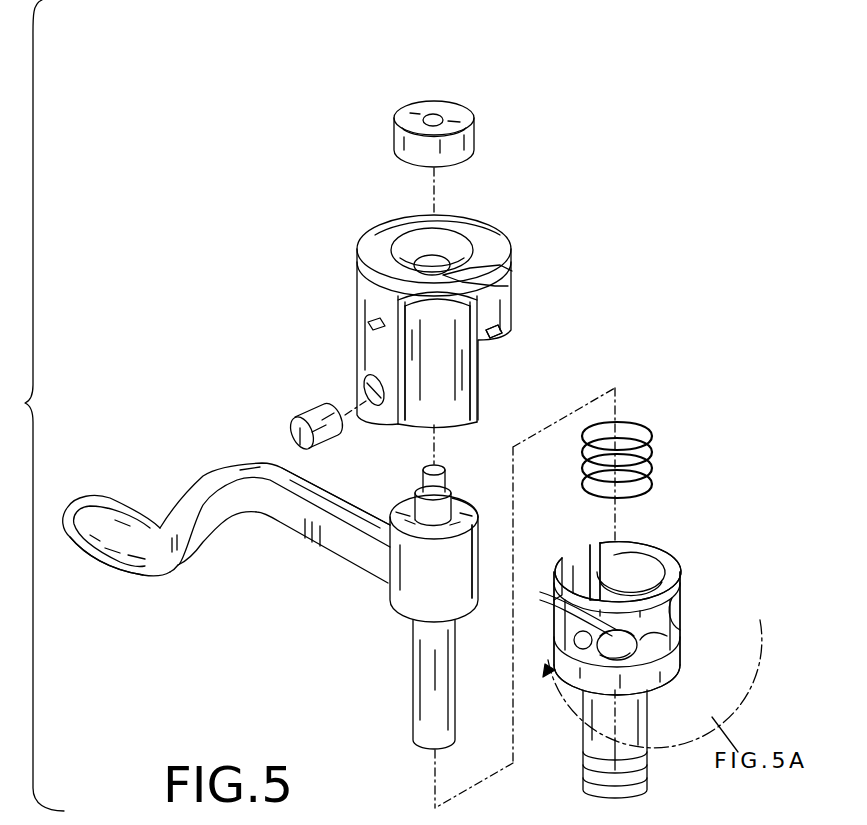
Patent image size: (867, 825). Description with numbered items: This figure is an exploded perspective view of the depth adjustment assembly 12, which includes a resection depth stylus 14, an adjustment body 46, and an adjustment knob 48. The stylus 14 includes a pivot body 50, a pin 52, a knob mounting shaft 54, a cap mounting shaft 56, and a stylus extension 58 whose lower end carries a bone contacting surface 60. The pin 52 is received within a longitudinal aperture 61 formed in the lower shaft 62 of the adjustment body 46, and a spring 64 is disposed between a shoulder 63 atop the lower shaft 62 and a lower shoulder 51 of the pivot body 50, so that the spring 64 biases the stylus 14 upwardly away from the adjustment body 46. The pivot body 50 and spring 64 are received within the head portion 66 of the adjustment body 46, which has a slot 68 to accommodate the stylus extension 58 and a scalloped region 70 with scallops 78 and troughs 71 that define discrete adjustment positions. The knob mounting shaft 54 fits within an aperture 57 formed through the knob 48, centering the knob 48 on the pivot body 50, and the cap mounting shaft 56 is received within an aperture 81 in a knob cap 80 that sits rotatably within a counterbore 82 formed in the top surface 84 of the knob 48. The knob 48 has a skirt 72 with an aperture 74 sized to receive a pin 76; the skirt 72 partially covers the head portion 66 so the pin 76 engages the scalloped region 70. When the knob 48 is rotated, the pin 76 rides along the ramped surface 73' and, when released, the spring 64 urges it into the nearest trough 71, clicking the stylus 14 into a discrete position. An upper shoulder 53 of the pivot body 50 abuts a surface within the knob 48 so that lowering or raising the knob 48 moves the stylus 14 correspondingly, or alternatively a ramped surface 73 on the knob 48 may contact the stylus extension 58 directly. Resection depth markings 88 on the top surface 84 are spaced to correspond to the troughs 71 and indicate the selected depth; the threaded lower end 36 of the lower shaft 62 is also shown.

The depth adjustment assembly 12 is at (396, 78).
The resection depth stylus 14 is at (138, 514).
The threaded stem end 36 is at (647, 765).
The adjustment body 46 is at (642, 538).
The adjustment knob 48 is at (513, 254).
The pivot body 50 is at (408, 592).
The lower shoulder 51 is at (468, 620).
The pin 52 is at (428, 685).
The upper shoulder 53 is at (465, 508).
The knob mounting shaft 54 is at (418, 505).
The cap mounting shaft 56 is at (443, 477).
The aperture 57 is at (430, 265).
The stylus extension 58 is at (230, 503).
The bone contacting surface 60 is at (112, 572).
The longitudinal aperture 61 is at (610, 652).
The lower shaft 62 is at (593, 742).
The shoulder 63 is at (576, 643).
The spring 64 is at (637, 428).
The head portion 66 is at (757, 612).
The slot 68 is at (580, 565).
The scalloped region 70 is at (682, 605).
The trough 71 is at (569, 603).
The skirt 72 is at (455, 389).
The ramped surface 73 is at (531, 327).
The ramped surface 73' is at (692, 621).
The aperture 74 is at (370, 385).
The pin 76 is at (320, 414).
The scallops 78 is at (654, 646).
The knob cap 80 is at (455, 108).
The aperture 81 is at (437, 116).
The counterbore 82 is at (450, 235).
The top surface 84 is at (375, 235).
The resection depth markings 88 is at (508, 287).